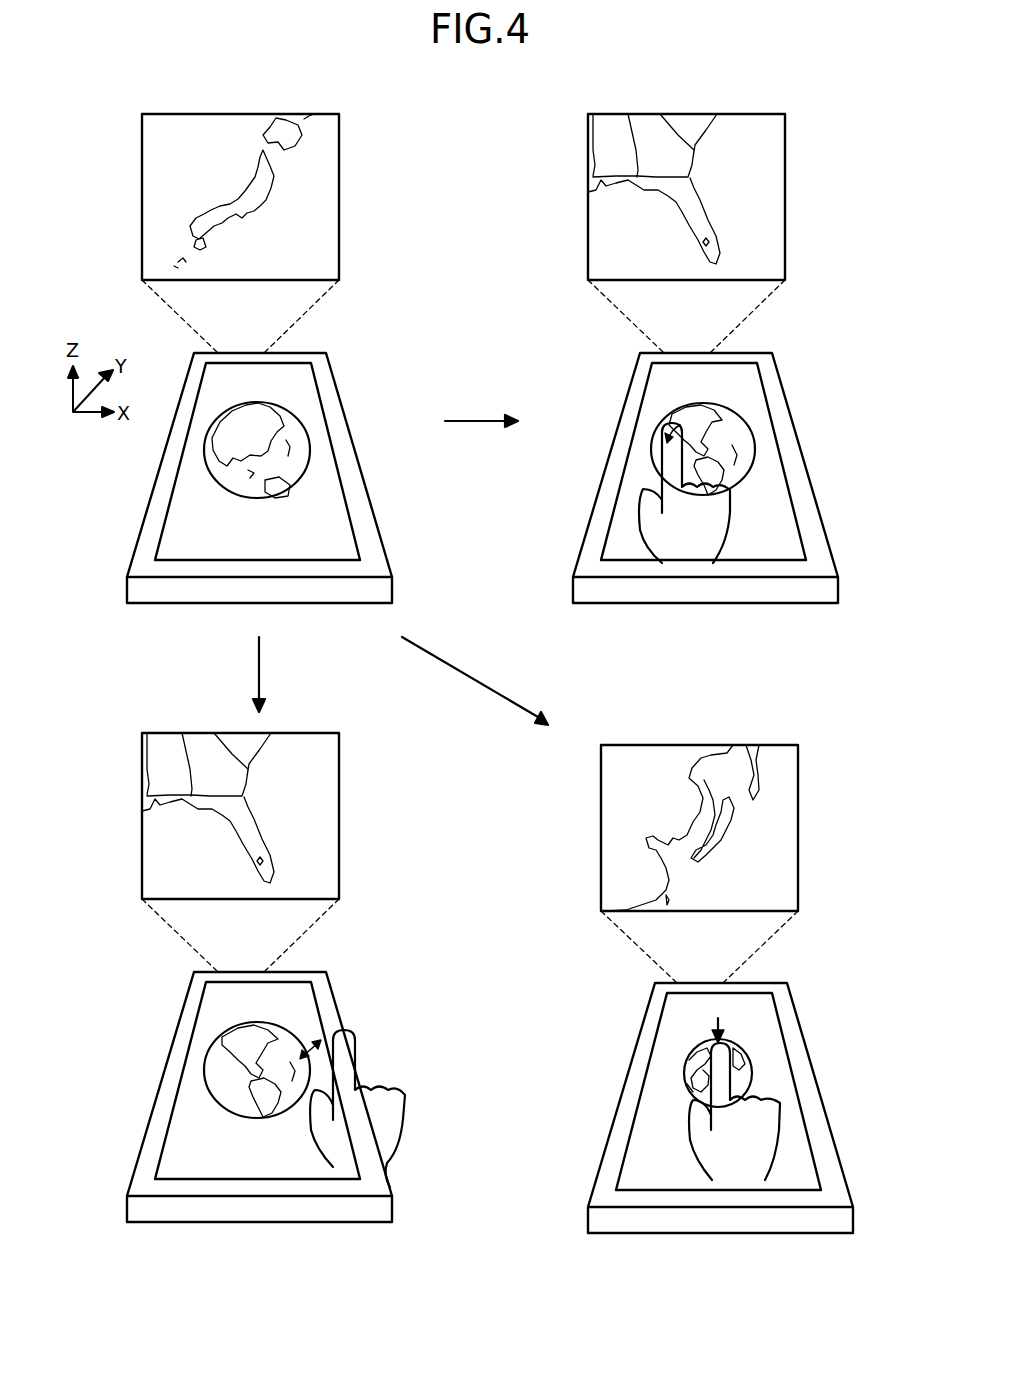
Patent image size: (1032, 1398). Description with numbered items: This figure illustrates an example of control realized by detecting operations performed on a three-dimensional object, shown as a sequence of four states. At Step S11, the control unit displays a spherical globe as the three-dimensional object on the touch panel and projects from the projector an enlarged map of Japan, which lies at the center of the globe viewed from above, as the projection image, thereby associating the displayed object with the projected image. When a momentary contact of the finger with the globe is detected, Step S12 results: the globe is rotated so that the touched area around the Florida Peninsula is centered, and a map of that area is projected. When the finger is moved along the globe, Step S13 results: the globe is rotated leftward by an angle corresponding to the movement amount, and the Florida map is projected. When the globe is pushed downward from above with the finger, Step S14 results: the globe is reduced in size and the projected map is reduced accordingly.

The Step S11 is at (371, 348).
The Step S12 is at (253, 950).
The Step S13 is at (699, 331).
The Step S14 is at (713, 957).